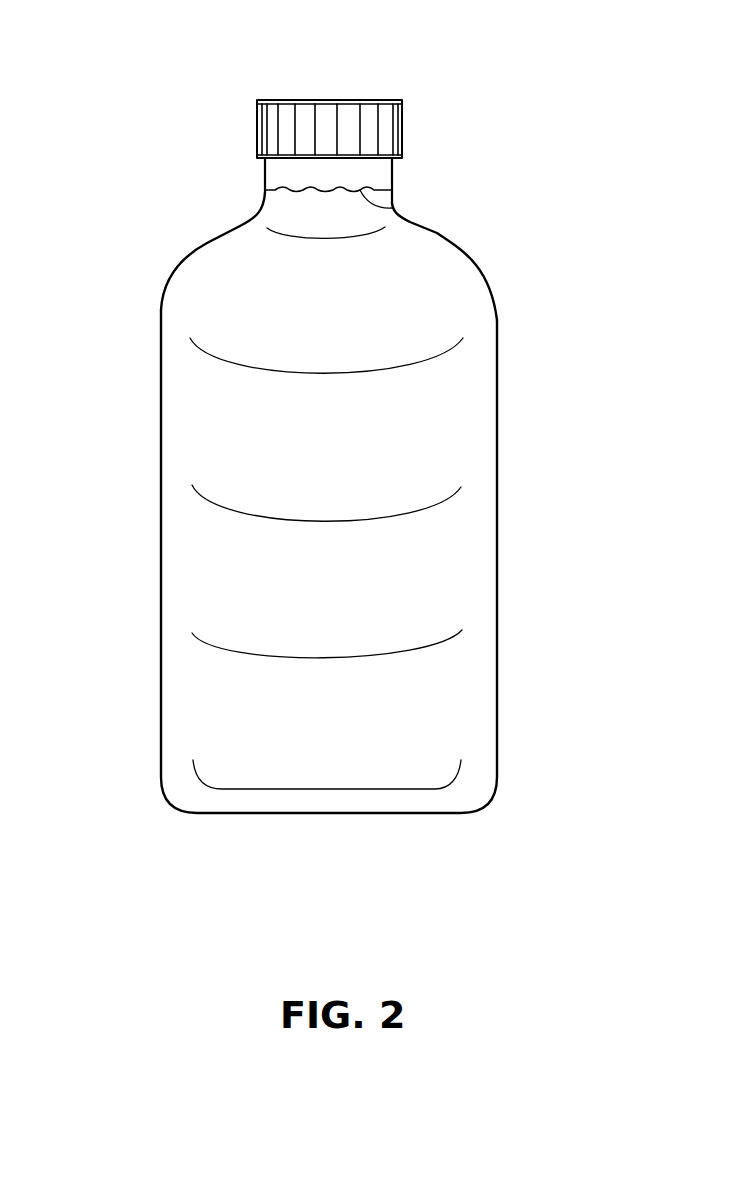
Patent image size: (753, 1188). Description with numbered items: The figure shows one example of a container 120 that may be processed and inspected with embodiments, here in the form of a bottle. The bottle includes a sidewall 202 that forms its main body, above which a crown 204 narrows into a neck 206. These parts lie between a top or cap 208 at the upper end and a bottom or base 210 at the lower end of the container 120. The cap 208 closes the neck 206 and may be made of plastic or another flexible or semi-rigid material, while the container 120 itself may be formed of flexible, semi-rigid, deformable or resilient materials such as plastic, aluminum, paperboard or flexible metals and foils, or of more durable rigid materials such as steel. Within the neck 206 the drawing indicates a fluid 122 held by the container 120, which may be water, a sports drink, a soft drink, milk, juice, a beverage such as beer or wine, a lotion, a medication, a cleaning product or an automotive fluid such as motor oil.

The container 120 is at (364, 440).
The fluid 122 is at (393, 207).
The sidewall 202 is at (161, 553).
The crown 204 is at (207, 240).
The neck 206 is at (263, 180).
The cap 208 is at (368, 117).
The base 210 is at (317, 815).